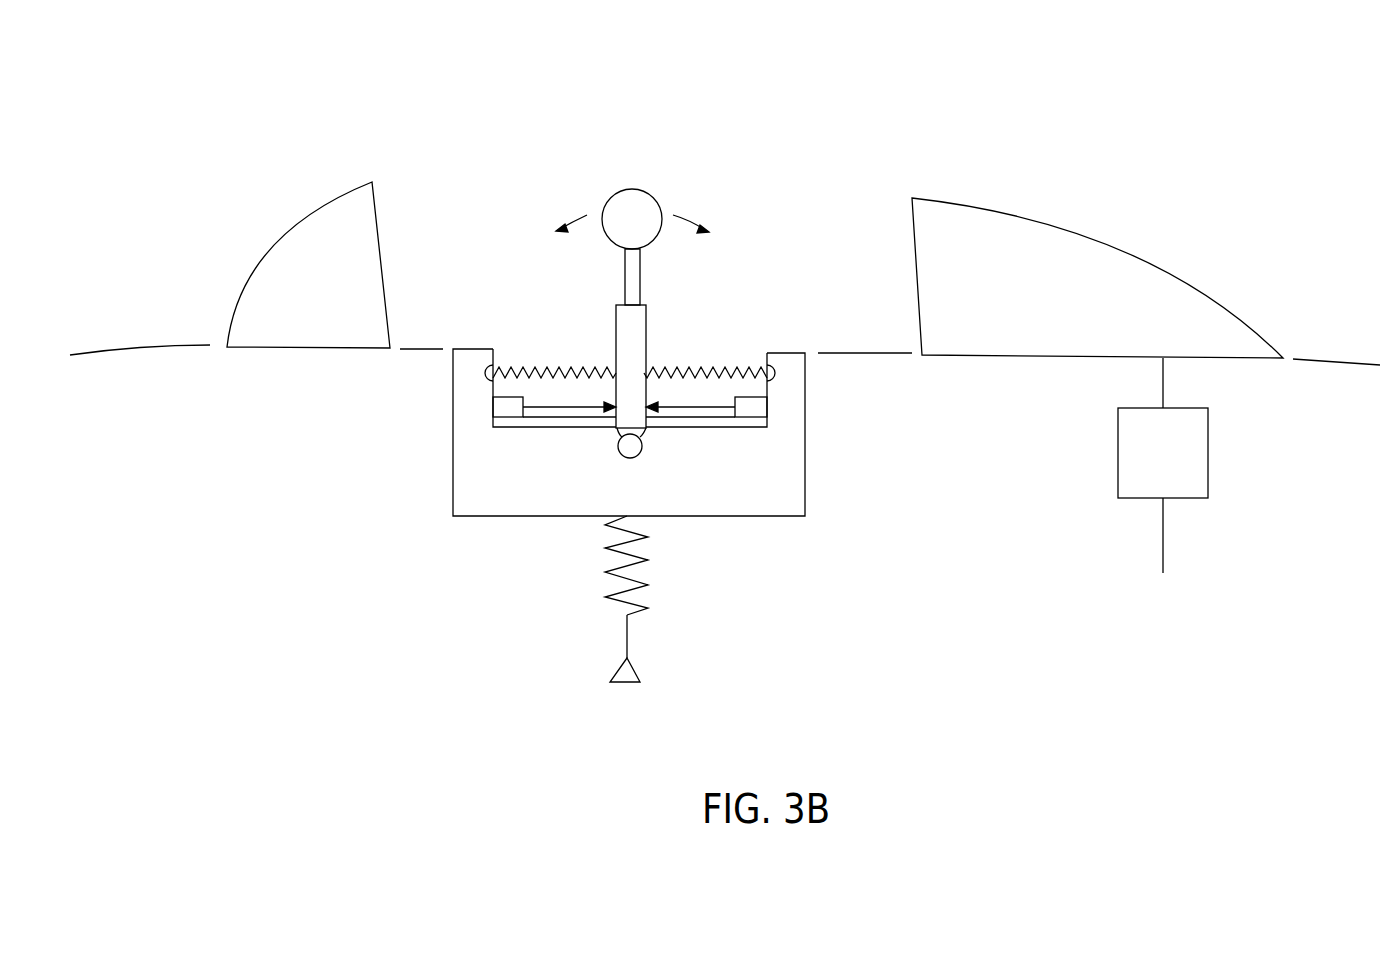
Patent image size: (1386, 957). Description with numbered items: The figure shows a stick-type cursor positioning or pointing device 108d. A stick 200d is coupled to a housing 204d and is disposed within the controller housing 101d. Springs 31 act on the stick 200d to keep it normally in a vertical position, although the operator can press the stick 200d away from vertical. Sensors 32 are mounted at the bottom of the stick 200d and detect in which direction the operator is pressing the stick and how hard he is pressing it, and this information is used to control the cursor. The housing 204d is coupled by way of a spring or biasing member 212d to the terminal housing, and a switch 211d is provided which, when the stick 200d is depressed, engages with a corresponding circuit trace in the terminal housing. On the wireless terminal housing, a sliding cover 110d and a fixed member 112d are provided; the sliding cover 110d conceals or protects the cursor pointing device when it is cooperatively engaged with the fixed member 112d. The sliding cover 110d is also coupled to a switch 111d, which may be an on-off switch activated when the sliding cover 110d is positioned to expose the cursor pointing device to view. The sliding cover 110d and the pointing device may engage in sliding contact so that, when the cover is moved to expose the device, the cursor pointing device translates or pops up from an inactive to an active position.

The stick-type cursor pointing device 108d is at (865, 73).
The controller housing 101d is at (1328, 383).
The sliding cover 110d is at (1038, 222).
The fixed member 112d is at (288, 232).
The switch 111d is at (1208, 442).
The stick 200d is at (640, 275).
The housing 204d is at (760, 510).
The springs 31 is at (555, 360).
The sensors 32 is at (508, 410).
The switch 211d is at (630, 550).
The spring or biasing member 212d is at (610, 597).